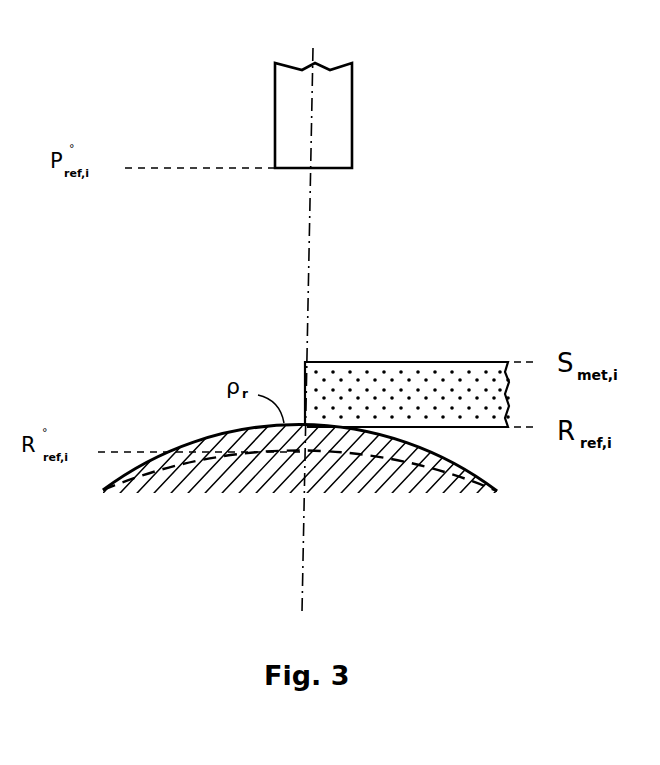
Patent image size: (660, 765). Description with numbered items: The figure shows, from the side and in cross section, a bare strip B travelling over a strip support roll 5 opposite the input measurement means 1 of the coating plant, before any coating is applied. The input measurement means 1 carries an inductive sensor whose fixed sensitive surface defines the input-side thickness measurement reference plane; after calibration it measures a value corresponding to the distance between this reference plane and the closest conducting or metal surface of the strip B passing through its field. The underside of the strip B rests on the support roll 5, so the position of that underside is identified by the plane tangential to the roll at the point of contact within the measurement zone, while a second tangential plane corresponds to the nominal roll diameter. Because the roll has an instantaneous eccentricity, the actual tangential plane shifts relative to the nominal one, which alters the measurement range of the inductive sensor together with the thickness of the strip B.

The input measurement means 1 is at (357, 117).
The metal strip B is at (457, 378).
The strip support roll 5 is at (352, 483).